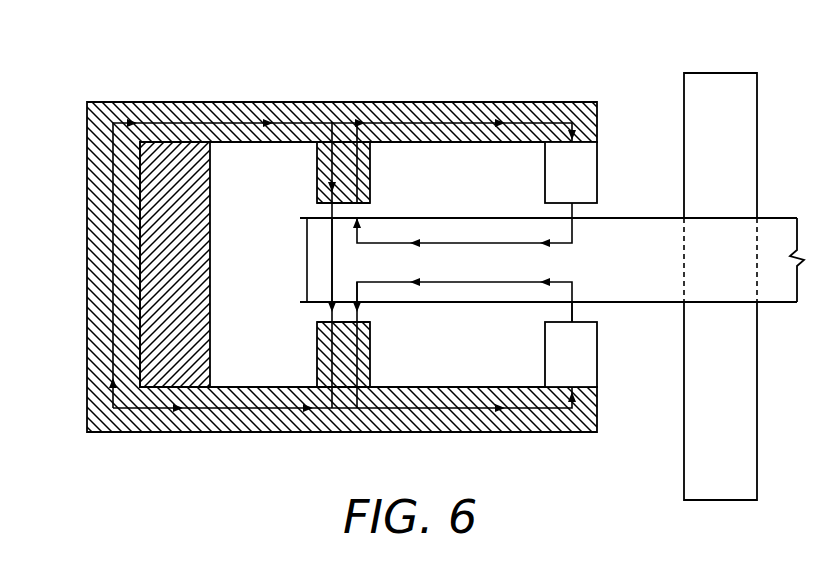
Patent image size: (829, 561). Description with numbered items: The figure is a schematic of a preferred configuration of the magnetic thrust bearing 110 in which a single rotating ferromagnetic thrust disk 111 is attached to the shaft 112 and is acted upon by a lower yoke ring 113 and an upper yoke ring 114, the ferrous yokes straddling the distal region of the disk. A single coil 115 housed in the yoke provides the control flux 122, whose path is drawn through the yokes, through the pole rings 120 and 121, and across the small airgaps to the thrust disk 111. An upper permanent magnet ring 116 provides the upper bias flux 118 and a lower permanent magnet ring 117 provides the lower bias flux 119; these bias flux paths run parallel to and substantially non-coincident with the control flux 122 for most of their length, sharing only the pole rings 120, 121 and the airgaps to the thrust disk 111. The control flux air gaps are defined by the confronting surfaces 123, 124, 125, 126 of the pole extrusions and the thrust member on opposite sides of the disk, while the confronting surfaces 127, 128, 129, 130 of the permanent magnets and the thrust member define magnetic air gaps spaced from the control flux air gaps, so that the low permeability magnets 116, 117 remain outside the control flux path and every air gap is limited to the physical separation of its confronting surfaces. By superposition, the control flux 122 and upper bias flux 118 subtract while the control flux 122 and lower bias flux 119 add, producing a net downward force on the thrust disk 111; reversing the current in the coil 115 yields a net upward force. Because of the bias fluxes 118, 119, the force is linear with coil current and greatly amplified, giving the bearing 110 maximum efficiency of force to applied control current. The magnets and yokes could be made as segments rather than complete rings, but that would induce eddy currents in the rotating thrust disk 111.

The bearing 110 is at (101, 56).
The thrust disk 111 is at (762, 218).
The shaft 112 is at (720, 73).
The lower yoke ring 113 is at (208, 432).
The upper yoke ring 114 is at (170, 102).
The coil 115 is at (212, 279).
The upper permanent magnet ring 116 is at (599, 172).
The lower permanent magnet ring 117 is at (598, 356).
The upper bias flux 118 is at (455, 102).
The lower bias flux 119 is at (468, 432).
The pole ring 120 is at (317, 185).
The pole ring 121 is at (317, 358).
The control flux 122 is at (88, 221).
The confronting surface 123 is at (317, 205).
The confronting surface 124 is at (307, 218).
The confronting surface 125 is at (320, 322).
The confronting surface 126 is at (307, 303).
The confronting surface 127 is at (597, 205).
The confronting surface 128 is at (577, 215).
The confronting surface 129 is at (590, 322).
The confronting surface 130 is at (558, 305).